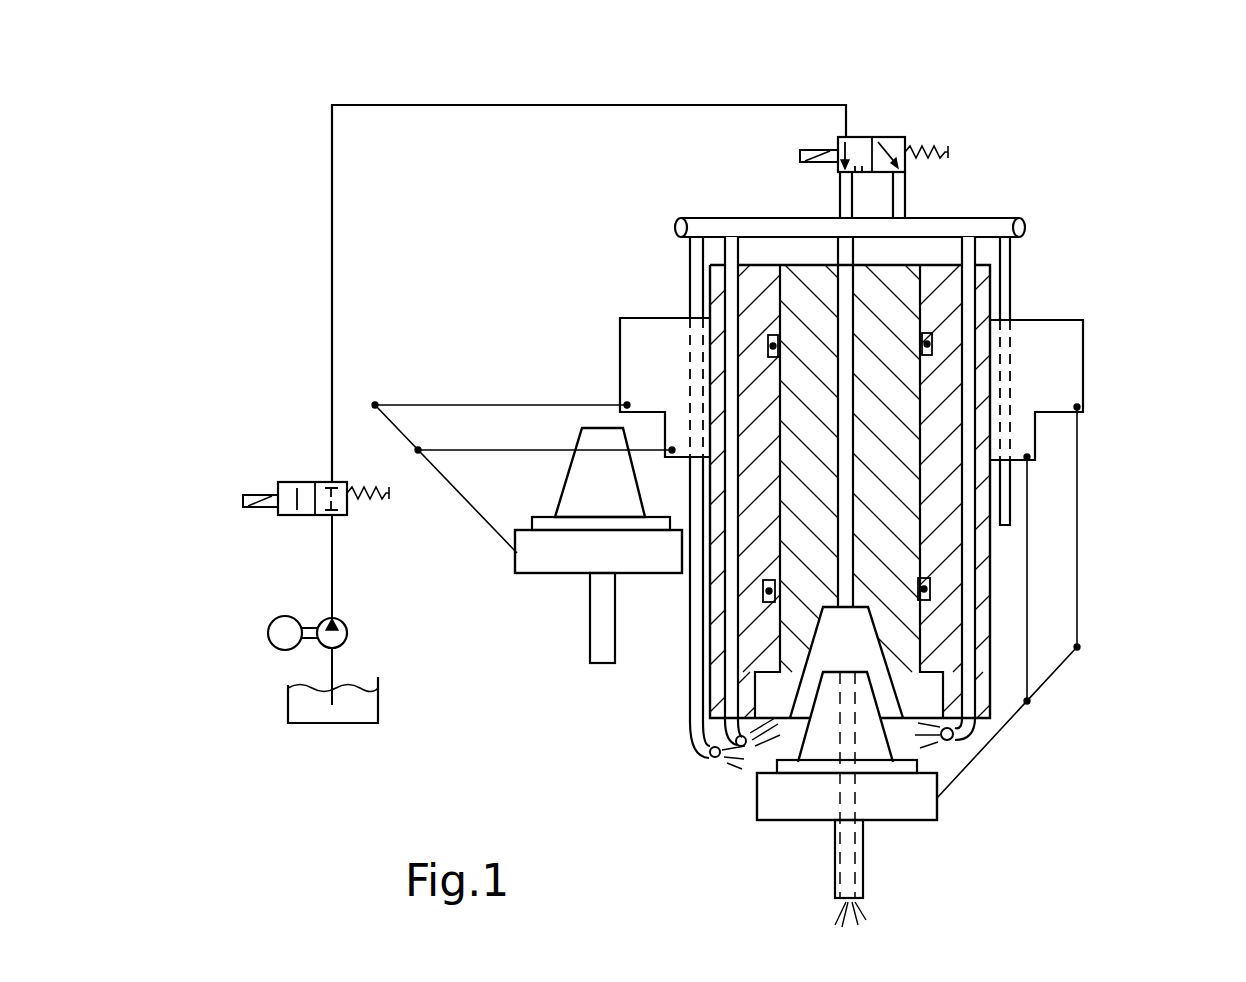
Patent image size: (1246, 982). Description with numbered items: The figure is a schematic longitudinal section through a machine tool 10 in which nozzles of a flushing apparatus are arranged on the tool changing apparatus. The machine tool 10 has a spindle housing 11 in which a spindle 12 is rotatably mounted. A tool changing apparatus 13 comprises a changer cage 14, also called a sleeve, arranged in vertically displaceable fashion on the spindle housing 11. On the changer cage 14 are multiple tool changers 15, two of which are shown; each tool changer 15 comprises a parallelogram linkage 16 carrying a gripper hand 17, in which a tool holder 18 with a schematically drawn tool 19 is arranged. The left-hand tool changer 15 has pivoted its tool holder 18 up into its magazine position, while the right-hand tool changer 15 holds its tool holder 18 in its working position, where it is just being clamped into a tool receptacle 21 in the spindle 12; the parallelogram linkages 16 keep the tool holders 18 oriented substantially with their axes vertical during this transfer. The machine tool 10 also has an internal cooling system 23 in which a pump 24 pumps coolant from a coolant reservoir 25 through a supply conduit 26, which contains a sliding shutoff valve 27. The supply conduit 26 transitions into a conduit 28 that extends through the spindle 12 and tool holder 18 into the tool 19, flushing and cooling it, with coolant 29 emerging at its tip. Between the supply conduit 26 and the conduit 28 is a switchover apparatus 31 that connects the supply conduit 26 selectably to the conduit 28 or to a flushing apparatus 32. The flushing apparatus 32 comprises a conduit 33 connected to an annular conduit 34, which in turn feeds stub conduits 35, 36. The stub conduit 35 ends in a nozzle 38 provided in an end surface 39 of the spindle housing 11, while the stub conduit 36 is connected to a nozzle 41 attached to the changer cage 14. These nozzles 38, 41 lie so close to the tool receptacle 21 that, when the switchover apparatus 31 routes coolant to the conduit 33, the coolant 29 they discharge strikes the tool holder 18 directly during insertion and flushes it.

The machine tool 10 is at (1118, 118).
The spindle housing 11 is at (935, 307).
The spindle 12 is at (887, 293).
The tool changing apparatus 13 is at (1093, 365).
The changer cage 14 is at (1057, 340).
The tool changer 15 is at (565, 405).
The parallelogram linkage 16 is at (450, 430).
The gripper hand 17 is at (535, 552).
The tool holder 18 is at (590, 522).
The tool 19 is at (598, 637).
The tool receptacle 21 is at (868, 645).
The internal cooling system 23 is at (868, 472).
The pump 24 is at (348, 632).
The coolant reservoir 25 is at (362, 707).
The supply conduit 26 is at (333, 240).
The sliding shutoff valve 27 is at (298, 480).
The conduit 28 is at (840, 195).
The coolant 29 is at (915, 742).
The switchover apparatus 31 is at (888, 137).
The flushing apparatus 32 is at (1003, 207).
The conduit 33 is at (905, 190).
The annular conduit 34 is at (1027, 226).
The stub conduit 35 is at (710, 650).
The stub conduit 36 is at (690, 290).
The nozzle 38 is at (738, 765).
The end surface 39 is at (760, 748).
The nozzle 41 is at (690, 722).